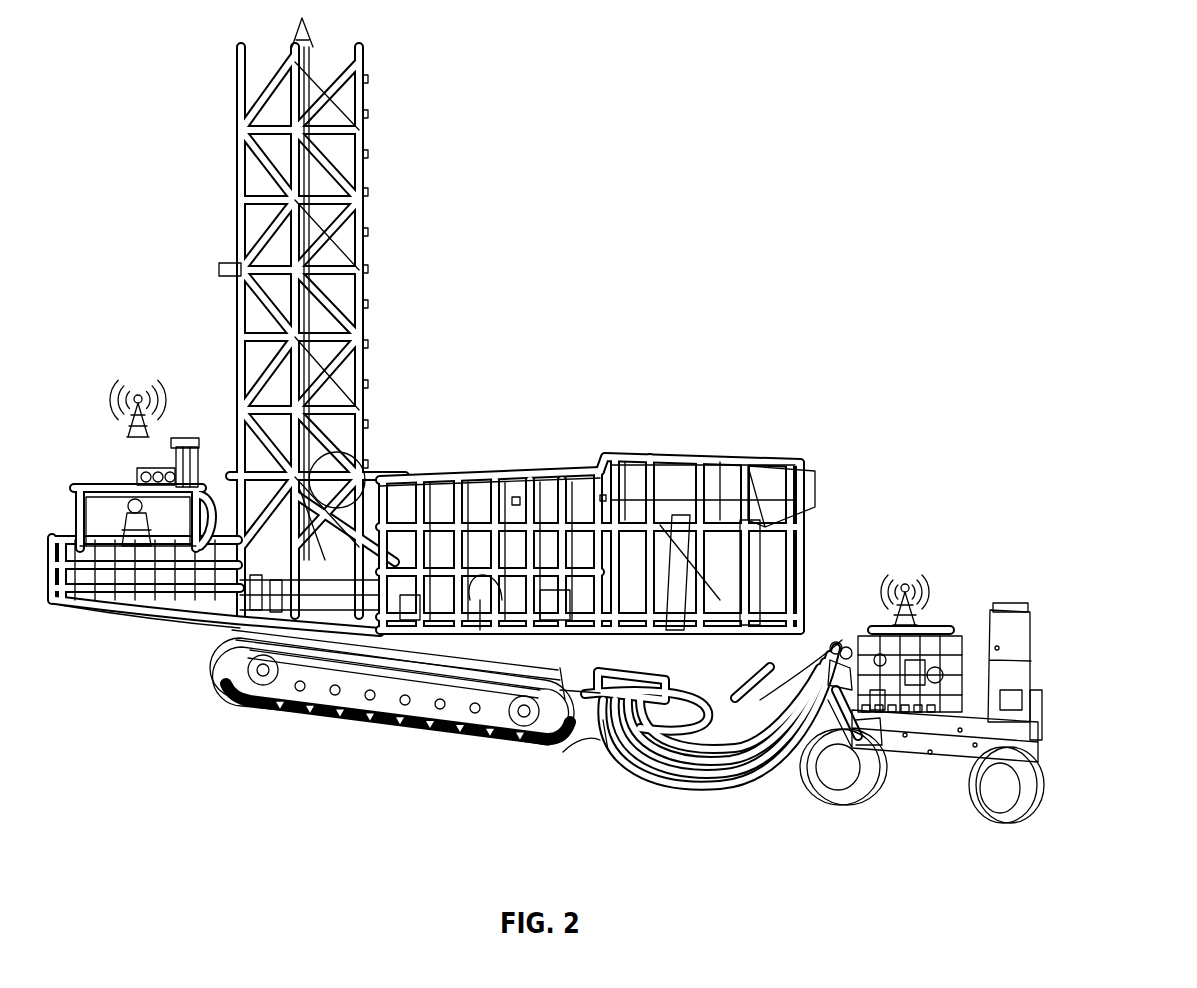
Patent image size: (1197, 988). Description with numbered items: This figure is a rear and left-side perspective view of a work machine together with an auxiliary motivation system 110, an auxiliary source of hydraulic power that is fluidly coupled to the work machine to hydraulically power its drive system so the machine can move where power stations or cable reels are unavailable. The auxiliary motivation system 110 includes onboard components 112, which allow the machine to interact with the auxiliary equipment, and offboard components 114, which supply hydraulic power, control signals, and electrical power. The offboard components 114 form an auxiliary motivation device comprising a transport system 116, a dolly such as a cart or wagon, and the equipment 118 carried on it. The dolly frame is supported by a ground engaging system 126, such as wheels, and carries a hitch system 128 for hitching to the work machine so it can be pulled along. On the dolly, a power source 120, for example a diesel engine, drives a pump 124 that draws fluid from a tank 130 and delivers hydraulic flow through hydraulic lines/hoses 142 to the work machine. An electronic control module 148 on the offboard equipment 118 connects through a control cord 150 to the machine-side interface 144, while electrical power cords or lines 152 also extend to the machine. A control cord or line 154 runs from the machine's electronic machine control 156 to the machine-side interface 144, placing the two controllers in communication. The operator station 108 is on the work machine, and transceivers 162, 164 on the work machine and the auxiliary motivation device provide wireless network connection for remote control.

The operator station 108 is at (97, 472).
The auxiliary motivation system 110 is at (621, 471).
The onboard components 112 is at (392, 726).
The offboard components 114 is at (642, 422).
The transport system 116 is at (995, 785).
The equipment 118 is at (1009, 640).
The power source 120 is at (935, 638).
The pump 124 is at (850, 650).
The ground engaging system 126 is at (955, 785).
The hitch system 128 is at (800, 645).
The tank 130 is at (1035, 678).
The hydraulic lines/hoses 142 is at (701, 714).
The machine-side interface 144 is at (565, 760).
The electronic control module 148 is at (875, 742).
The control cord 150 is at (603, 732).
The electrical power cords or lines 152 is at (775, 765).
The control cord or line 154 is at (565, 768).
The electronic machine control 156 is at (173, 610).
The transceiver 162 is at (140, 388).
The transceiver 164 is at (910, 575).